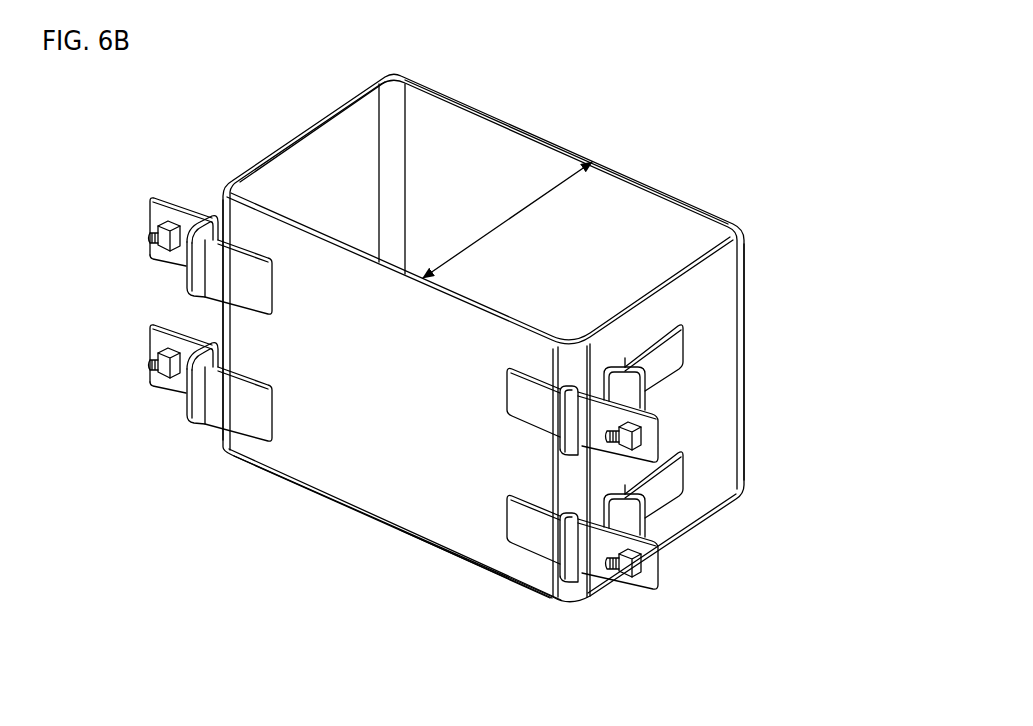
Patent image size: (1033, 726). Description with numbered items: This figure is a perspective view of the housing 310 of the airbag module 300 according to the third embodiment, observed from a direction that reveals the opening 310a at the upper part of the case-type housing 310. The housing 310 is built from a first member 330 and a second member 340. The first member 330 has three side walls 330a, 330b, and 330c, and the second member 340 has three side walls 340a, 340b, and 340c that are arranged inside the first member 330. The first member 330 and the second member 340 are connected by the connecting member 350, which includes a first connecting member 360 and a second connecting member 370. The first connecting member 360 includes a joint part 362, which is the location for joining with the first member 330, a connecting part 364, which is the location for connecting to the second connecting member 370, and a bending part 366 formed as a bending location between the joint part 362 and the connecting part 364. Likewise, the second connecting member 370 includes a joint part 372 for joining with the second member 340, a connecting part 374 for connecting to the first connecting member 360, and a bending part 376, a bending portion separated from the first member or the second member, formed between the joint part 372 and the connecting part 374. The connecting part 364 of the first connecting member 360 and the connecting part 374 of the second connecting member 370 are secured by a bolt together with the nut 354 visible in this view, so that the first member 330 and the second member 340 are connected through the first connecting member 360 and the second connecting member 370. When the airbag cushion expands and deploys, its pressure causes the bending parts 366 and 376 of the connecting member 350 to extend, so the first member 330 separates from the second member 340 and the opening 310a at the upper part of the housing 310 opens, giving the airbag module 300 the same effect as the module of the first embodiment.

The airbag module 300 is at (690, 116).
The housing 310 is at (768, 238).
The opening 310a is at (498, 222).
The first member 330 is at (657, 177).
The side wall 330a is at (718, 470).
The side wall 330b is at (522, 150).
The side wall 330c is at (342, 105).
The second member 340 is at (355, 528).
The side wall 340a is at (710, 247).
The side wall 340b is at (450, 535).
The side wall 340c is at (296, 160).
The connecting member 350 is at (680, 395).
The nut 354 is at (630, 424).
The first connecting member 360 is at (707, 345).
The joint part 362 is at (655, 357).
The connecting part 364 is at (662, 424).
The bending part 366 is at (646, 379).
The second connecting member 370 is at (508, 459).
The joint part 372 is at (530, 397).
The connecting part 374 is at (662, 478).
The bending part 376 is at (566, 428).